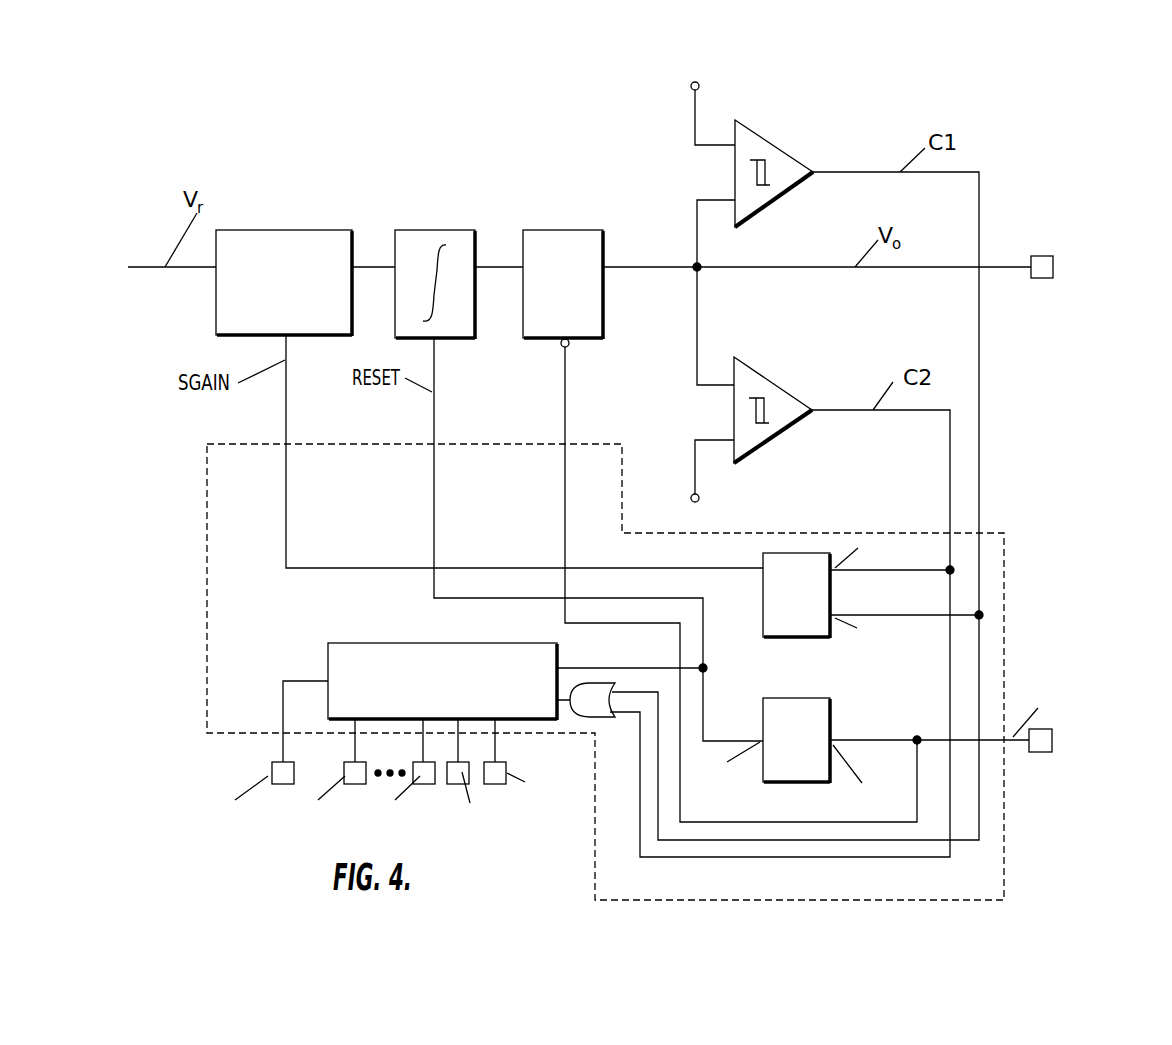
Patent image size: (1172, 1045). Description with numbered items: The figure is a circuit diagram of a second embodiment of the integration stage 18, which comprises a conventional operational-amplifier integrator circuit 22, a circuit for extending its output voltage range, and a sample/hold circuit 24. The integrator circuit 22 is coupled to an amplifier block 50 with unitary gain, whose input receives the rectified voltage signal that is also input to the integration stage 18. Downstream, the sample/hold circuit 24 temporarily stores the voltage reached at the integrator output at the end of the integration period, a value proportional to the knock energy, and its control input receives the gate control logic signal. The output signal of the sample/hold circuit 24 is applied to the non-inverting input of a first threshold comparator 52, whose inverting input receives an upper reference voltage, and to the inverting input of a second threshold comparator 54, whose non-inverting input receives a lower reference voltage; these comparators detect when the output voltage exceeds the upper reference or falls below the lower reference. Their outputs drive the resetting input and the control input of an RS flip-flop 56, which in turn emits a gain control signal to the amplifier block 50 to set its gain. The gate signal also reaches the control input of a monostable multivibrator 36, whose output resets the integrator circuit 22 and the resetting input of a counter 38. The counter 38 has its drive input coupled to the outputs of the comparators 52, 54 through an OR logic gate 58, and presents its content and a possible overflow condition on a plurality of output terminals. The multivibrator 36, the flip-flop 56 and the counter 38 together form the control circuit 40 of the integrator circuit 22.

The integration stage 18 is at (1072, 384).
The integrator circuit 22 is at (417, 228).
The sample/hold circuit 24 is at (560, 228).
The monostable multivibrator 36 is at (824, 716).
The counter 38 is at (440, 652).
The control circuit 40 is at (205, 530).
The amplifier block 50 is at (226, 318).
The first threshold comparator 52 is at (770, 140).
The second threshold comparator 54 is at (768, 378).
The RS flip-flop 56 is at (775, 628).
The OR logic gate 58 is at (590, 690).